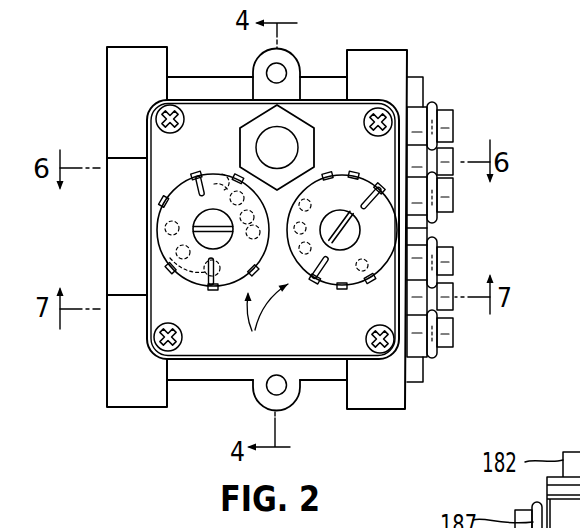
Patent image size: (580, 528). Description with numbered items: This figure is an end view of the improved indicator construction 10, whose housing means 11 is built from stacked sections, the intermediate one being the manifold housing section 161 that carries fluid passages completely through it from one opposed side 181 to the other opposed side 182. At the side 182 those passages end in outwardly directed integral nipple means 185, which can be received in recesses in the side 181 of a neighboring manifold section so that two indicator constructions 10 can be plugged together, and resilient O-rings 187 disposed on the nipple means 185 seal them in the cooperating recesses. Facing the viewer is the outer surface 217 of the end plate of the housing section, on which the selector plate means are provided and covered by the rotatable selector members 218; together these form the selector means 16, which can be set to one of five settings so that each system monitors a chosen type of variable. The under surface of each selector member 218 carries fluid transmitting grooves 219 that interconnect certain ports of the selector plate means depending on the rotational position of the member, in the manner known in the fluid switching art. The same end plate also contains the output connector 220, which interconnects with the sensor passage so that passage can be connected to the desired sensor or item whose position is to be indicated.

The indicator construction 10 is at (458, 70).
The housing means 11 is at (320, 381).
The selector means 16 is at (256, 317).
The intermediate housing section 161 is at (410, 54).
The opposed side 181 is at (107, 82).
The other opposed side 182 is at (407, 234).
The nipple means 185 is at (448, 125).
The O-rings 187 is at (432, 114).
The outer surface 217 is at (165, 307).
The rotatable selector members 218 is at (163, 210).
The grooves 219 is at (222, 174).
The output connector 220 is at (298, 120).